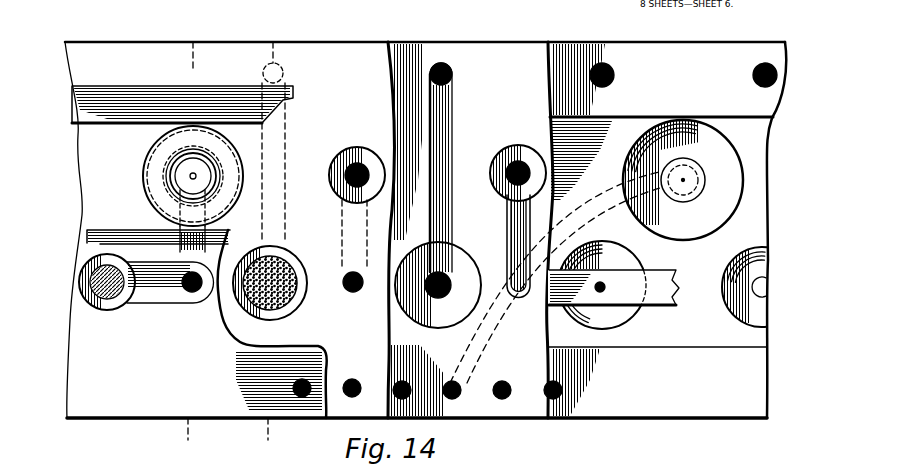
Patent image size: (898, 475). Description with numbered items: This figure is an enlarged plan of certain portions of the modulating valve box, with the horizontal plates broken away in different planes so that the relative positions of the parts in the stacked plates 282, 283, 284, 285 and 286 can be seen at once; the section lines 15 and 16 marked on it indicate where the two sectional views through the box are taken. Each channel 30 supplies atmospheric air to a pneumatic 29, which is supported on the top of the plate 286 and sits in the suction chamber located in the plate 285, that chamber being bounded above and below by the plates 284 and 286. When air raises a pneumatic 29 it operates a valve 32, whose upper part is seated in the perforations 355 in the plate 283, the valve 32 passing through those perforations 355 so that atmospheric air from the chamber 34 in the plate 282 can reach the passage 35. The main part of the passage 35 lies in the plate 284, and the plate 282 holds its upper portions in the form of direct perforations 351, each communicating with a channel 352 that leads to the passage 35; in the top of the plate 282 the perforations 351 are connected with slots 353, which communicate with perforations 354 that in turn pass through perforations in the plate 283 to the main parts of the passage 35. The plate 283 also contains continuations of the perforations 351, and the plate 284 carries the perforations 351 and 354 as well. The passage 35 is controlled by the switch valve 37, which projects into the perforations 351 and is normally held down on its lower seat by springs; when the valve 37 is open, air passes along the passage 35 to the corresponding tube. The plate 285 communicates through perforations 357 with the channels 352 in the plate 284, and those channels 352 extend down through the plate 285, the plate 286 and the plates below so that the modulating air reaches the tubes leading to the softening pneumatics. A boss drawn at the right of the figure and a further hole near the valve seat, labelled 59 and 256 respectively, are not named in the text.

The section line 15— 15 is at (186, 232).
The section line 16— 16 is at (269, 236).
The pneumatic 29 is at (713, 157).
The channel 30 is at (349, 372).
The valve 32 is at (147, 163).
The chamber 34 is at (100, 203).
The passage 35 is at (518, 220).
The valve 37 is at (277, 273).
The boss 59 is at (623, 312).
The hole 256 is at (510, 173).
The plate 282 is at (115, 97).
The plate 283 is at (223, 252).
The plate 284 is at (454, 230).
The plate 285 is at (661, 80).
The plate 286 is at (747, 214).
The perforation 351 is at (83, 292).
The channel 352 is at (443, 62).
The slot 353 is at (157, 292).
The perforation 354 is at (193, 292).
The perforation 355 is at (338, 167).
The perforation 357 is at (442, 278).